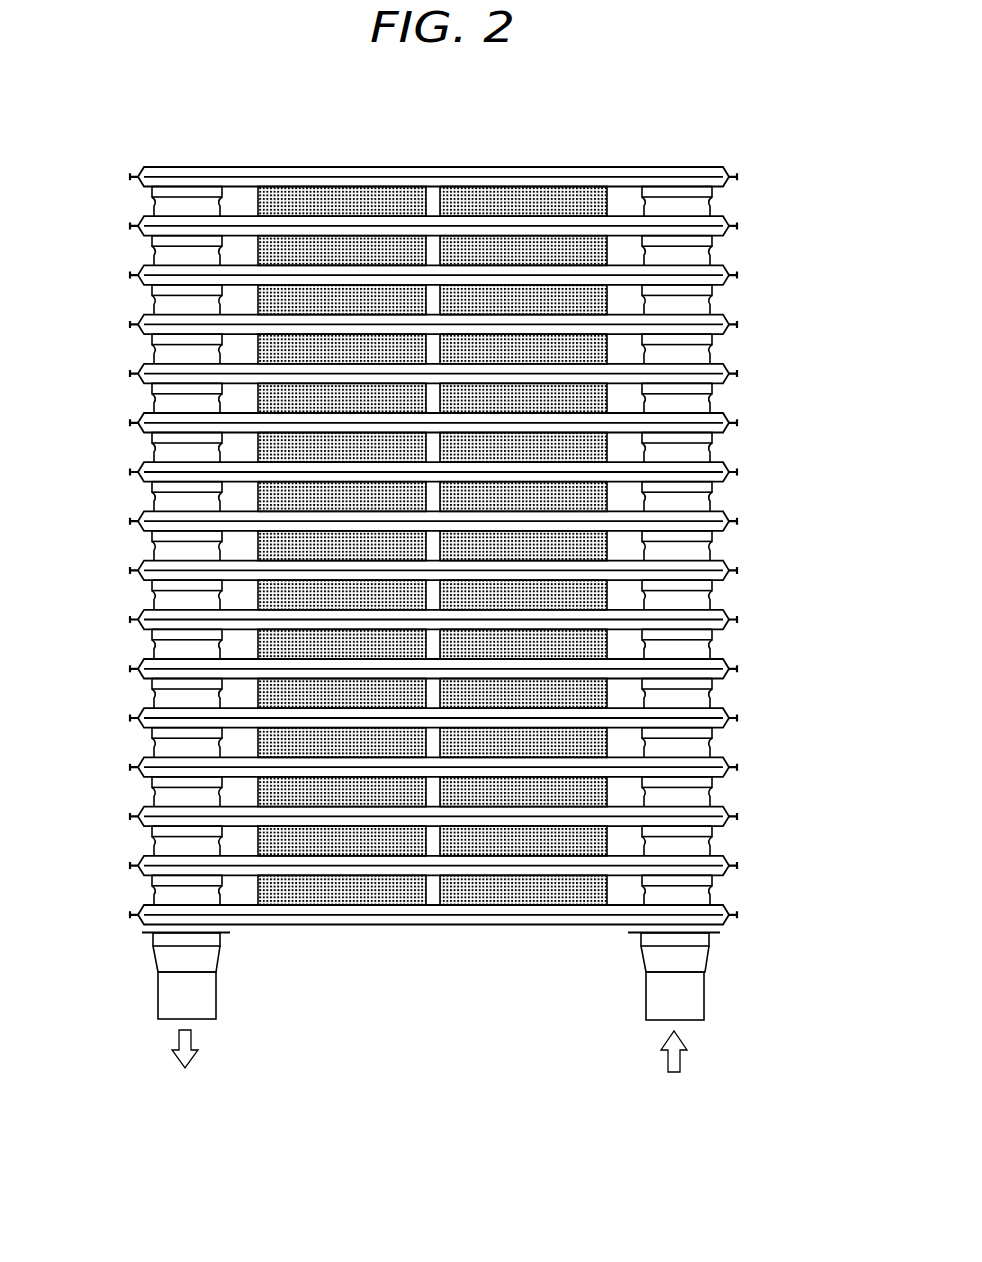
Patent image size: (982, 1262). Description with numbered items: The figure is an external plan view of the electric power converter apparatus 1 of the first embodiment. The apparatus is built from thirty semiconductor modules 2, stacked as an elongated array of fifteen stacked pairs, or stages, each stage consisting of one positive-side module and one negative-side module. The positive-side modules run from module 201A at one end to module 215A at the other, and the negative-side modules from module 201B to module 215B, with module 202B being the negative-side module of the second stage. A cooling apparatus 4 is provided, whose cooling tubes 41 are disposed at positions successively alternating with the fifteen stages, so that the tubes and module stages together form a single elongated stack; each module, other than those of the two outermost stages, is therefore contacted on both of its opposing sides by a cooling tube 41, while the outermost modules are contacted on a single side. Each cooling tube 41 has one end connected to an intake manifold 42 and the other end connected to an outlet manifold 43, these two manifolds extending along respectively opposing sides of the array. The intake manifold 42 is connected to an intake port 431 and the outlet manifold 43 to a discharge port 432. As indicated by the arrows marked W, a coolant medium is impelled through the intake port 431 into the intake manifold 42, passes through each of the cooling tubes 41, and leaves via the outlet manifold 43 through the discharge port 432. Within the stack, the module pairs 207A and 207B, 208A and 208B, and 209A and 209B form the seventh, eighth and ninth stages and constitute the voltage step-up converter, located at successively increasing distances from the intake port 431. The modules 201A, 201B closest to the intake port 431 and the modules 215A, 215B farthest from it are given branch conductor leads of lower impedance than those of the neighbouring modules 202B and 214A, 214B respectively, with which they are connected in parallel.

The electric power converter apparatus 1 is at (302, 1010).
The semiconductor modules 2 is at (468, 195).
The cooling apparatus 4 is at (728, 149).
The cooling tubes 41 is at (372, 270).
The intake manifold 42 is at (702, 257).
The outlet manifold 43 is at (168, 745).
The positive-side semiconductor module 201A is at (407, 895).
The negative-side semiconductor module 201B is at (577, 897).
The negative-side semiconductor module 202B is at (593, 840).
The positive-side semiconductor module 207A is at (275, 593).
The negative-side semiconductor module 207B is at (598, 598).
The positive-side semiconductor module 208A is at (275, 545).
The negative-side semiconductor module 208B is at (598, 550).
The positive-side semiconductor module 209A is at (277, 495).
The negative-side semiconductor module 209B is at (598, 503).
The positive-side semiconductor module 214A is at (277, 248).
The negative-side semiconductor module 214B is at (592, 215).
The positive-side semiconductor module 215A is at (292, 192).
The negative-side semiconductor module 215B is at (582, 243).
The intake port 431 is at (692, 993).
The discharge port 432 is at (172, 992).